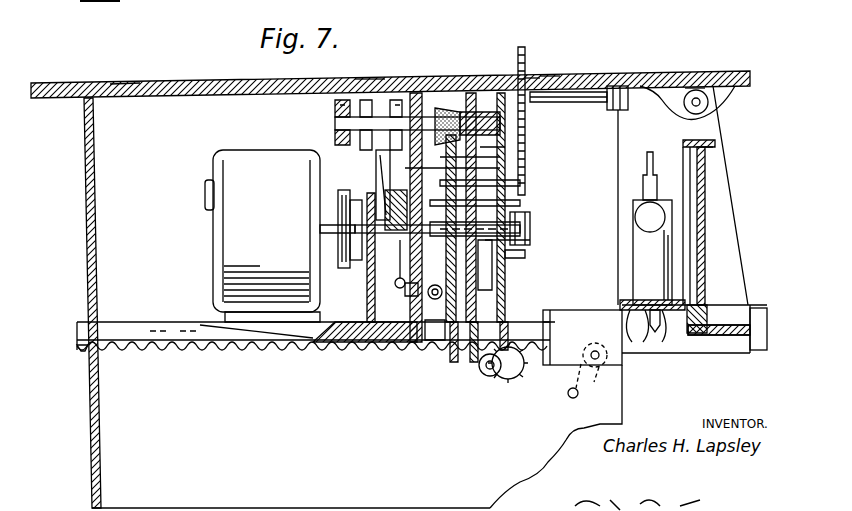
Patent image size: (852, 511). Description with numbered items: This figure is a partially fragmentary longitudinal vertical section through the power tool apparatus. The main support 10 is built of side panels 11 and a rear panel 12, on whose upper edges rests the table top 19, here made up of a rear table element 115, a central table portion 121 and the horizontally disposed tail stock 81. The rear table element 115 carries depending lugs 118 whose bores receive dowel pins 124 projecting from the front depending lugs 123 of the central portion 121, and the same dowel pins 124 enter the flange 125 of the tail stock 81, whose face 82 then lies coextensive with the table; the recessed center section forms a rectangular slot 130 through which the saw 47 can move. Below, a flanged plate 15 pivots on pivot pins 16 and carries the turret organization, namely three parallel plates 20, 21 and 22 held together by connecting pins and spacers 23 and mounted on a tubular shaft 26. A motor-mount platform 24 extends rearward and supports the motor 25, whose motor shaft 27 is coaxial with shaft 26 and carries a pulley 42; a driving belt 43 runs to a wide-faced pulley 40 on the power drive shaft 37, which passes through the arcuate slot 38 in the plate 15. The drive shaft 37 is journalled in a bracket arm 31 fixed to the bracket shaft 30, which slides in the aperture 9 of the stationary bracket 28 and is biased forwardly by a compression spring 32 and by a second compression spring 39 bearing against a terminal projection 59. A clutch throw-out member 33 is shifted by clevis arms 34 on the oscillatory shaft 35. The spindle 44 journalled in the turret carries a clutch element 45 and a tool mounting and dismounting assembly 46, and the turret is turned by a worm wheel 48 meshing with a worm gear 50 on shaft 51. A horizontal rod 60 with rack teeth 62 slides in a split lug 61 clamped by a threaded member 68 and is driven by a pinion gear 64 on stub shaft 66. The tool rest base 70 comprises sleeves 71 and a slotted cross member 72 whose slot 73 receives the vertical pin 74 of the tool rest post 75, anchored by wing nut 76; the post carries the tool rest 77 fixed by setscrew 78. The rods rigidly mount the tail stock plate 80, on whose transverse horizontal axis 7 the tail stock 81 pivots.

The transverse horizontal axis 7 is at (708, 102).
The aperture 9 is at (345, 228).
The main support 10 is at (85, 200).
The side panel 11 is at (196, 86).
The rear panel 12 is at (95, 232).
The flanged plate 15 is at (385, 345).
The pivot pins 16 is at (478, 108).
The table top 19 is at (380, 69).
The turret plate 20 is at (450, 355).
The turret plate 21 is at (474, 362).
The turret plate component 22 is at (508, 318).
The connecting pins and spacers 23 is at (520, 202).
The motor-mount platform 24 is at (320, 350).
The motor 25 is at (224, 255).
The tubular shaft 26 is at (530, 216).
The motor shaft 27 is at (325, 228).
The stationary bracket 28 is at (368, 286).
The bracket shaft 30 is at (370, 231).
The bracket arm 31 is at (338, 192).
The compression spring 32 is at (375, 200).
The clutch throw-out member 33 is at (396, 284).
The clevis arms 34 is at (406, 293).
The oscillatory shaft 35 is at (520, 254).
The power drive shaft 37 is at (418, 100).
The arcuate slot 38 is at (431, 112).
The compression spring 39 is at (528, 232).
The wide-faced pulley 40 is at (340, 128).
The pulley 42 is at (345, 268).
The driving belt 43 is at (440, 128).
The spindle 44 is at (499, 95).
The clutch element 45 is at (455, 115).
The tool mounting and dismounting assembly 46 is at (520, 147).
The saw 47 is at (530, 82).
The worm wheel 48 is at (392, 208).
The worm gear 50 is at (436, 299).
The shaft 51 is at (482, 290).
The terminal projection 59 is at (533, 238).
The horizontal rod 60 is at (545, 330).
The split lug 61 is at (560, 318).
The teeth 62 is at (200, 352).
The pinion gear 64 is at (512, 378).
The stub shaft 66 is at (490, 377).
The threaded member 68 is at (596, 368).
The tool rest base 70 is at (720, 300).
The sleeve 71 is at (690, 345).
The slotted cross member 72 is at (725, 272).
The slot 73 is at (640, 300).
The vertical pin 74 is at (665, 335).
The tool rest post 75 is at (668, 245).
The wing nut 76 is at (638, 345).
The tool rest 77 is at (649, 160).
The setscrew 78 is at (633, 213).
The tail stock plate 80 is at (700, 170).
The tail stock 81 is at (664, 82).
The face 82 is at (712, 72).
The rear table element 115 is at (122, 84).
The depending lugs 118 is at (522, 47).
The central table portion 121 is at (597, 92).
The front depending lugs 123 is at (618, 118).
The dowel pins 124 is at (622, 90).
The flange 125 is at (672, 100).
The rectangular slot 130 is at (560, 76).